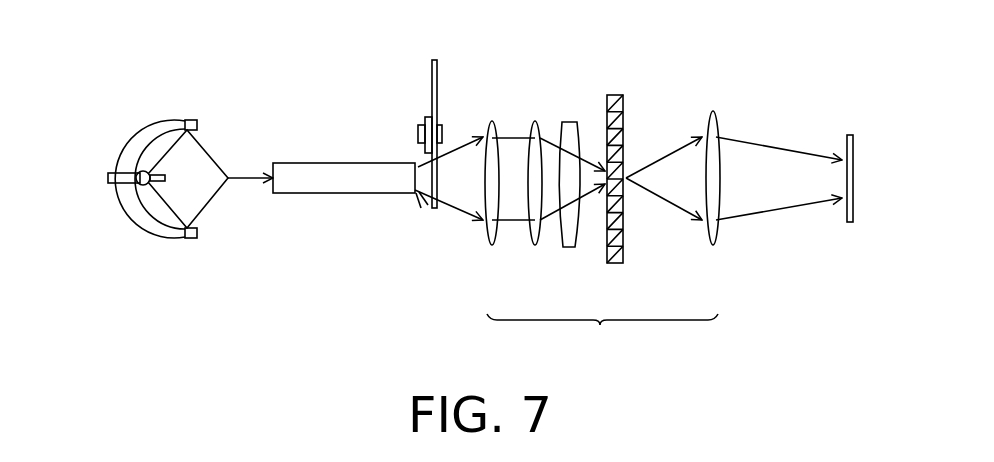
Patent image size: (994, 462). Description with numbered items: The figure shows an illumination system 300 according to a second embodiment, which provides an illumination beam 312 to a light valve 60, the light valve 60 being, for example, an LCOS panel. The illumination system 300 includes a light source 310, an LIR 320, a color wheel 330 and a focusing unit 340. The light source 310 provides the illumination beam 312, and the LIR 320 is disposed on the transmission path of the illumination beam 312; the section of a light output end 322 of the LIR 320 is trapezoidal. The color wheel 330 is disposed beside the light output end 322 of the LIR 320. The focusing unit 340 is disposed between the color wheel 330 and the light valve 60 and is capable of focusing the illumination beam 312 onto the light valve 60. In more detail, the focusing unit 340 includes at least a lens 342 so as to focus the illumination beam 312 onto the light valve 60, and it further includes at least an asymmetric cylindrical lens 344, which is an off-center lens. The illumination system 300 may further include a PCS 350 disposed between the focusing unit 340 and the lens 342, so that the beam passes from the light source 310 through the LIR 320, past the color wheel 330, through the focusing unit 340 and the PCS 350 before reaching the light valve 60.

The illumination system 300 is at (752, 73).
The light source 310 is at (190, 238).
The illumination beam 312 is at (256, 176).
The LIR 320 is at (327, 193).
The light output end 322 is at (418, 194).
The color wheel 330 is at (438, 80).
The focusing unit 340 is at (602, 338).
The lens 342 is at (492, 246).
The asymmetric cylindrical lens 344 is at (570, 247).
The PCS 350 is at (623, 107).
The light valve 60 is at (850, 222).